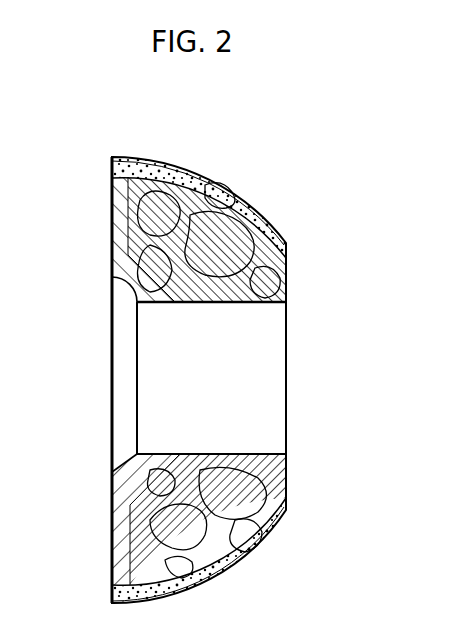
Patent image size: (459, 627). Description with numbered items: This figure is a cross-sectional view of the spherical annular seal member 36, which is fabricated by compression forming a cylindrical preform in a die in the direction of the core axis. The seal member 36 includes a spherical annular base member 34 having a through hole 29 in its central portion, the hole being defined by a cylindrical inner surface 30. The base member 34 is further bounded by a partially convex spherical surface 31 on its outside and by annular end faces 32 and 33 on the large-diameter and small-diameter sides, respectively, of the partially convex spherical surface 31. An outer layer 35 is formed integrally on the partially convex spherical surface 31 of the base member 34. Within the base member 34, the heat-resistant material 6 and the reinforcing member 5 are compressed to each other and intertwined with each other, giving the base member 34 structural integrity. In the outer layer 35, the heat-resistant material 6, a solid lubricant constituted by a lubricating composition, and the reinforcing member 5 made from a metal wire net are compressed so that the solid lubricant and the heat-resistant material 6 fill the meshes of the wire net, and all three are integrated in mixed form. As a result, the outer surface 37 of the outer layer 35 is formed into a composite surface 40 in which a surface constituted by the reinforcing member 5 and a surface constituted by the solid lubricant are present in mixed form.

The reinforcing member 5 is at (122, 204).
The heat-resistant material 6 is at (113, 286).
The through hole 29 is at (244, 389).
The cylindrical inner surface 30 is at (234, 302).
The partially convex spherical surface 31 is at (227, 197).
The annular end face 32 is at (110, 241).
The annular end face 33 is at (287, 481).
The spherical annular base member 34 is at (140, 513).
The outer layer 35 is at (262, 215).
The spherical annular seal member 36 is at (134, 138).
The outer surface 37 is at (166, 162).
The composite surface 40 is at (232, 563).